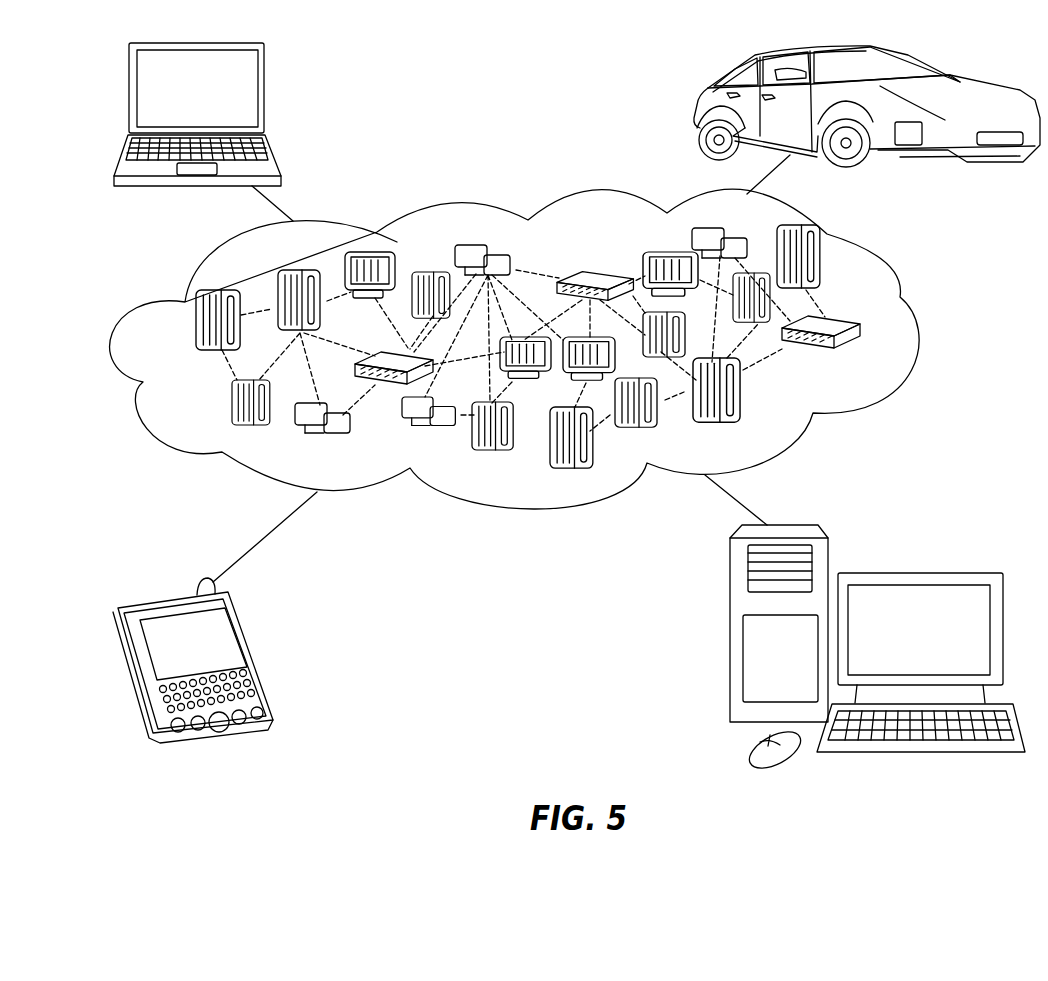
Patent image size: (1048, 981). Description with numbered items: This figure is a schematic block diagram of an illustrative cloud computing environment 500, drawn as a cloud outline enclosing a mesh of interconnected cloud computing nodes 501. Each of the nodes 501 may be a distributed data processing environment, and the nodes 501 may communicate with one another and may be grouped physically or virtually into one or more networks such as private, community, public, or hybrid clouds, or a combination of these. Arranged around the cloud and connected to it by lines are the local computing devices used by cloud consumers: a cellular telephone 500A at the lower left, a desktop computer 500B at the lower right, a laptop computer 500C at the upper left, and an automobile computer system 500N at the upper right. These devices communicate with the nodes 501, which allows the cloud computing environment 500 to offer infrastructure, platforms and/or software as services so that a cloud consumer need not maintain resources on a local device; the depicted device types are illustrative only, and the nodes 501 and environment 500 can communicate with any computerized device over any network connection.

The cloud computing environment 500 is at (915, 326).
The cloud computing nodes 501 is at (861, 353).
The cellular telephone 500A is at (262, 652).
The desktop computer 500B is at (912, 575).
The laptop computer 500C is at (272, 98).
The automobile computer system 500N is at (700, 108).